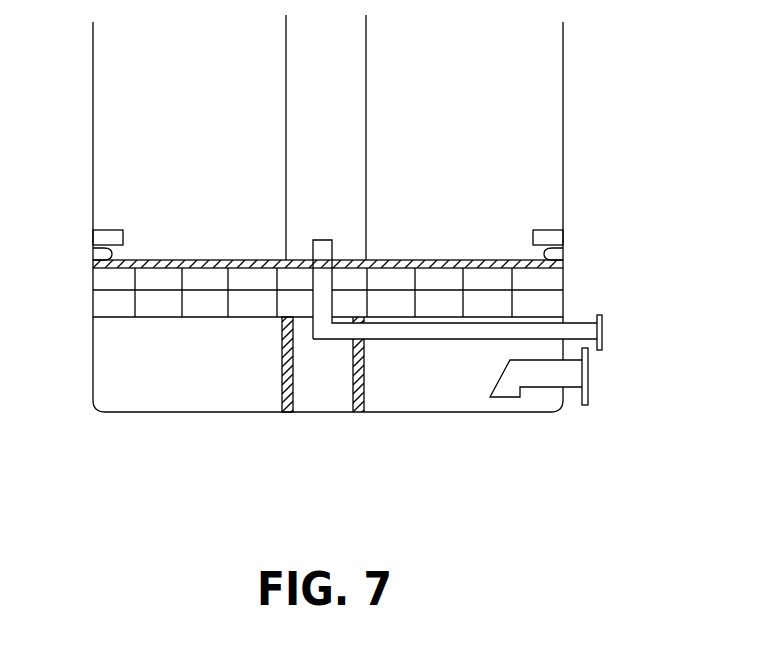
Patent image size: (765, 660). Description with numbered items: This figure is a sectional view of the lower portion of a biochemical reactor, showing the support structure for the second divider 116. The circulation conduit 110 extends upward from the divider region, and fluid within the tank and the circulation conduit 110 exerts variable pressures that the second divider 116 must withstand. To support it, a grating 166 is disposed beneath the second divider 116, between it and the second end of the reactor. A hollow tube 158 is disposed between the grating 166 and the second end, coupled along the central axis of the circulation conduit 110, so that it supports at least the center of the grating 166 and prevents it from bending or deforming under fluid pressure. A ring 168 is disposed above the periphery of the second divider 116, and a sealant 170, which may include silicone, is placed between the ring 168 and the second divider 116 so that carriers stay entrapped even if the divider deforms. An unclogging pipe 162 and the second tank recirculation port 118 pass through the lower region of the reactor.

The circulation conduit 110 is at (300, 75).
The second divider 116 is at (96, 260).
The second tank recirculation port 118 is at (588, 373).
The hollow tube 158 is at (284, 397).
The unclogging pipe 162 is at (603, 331).
The grating 166 is at (113, 300).
The ring 168 is at (547, 231).
The sealant 170 is at (563, 253).